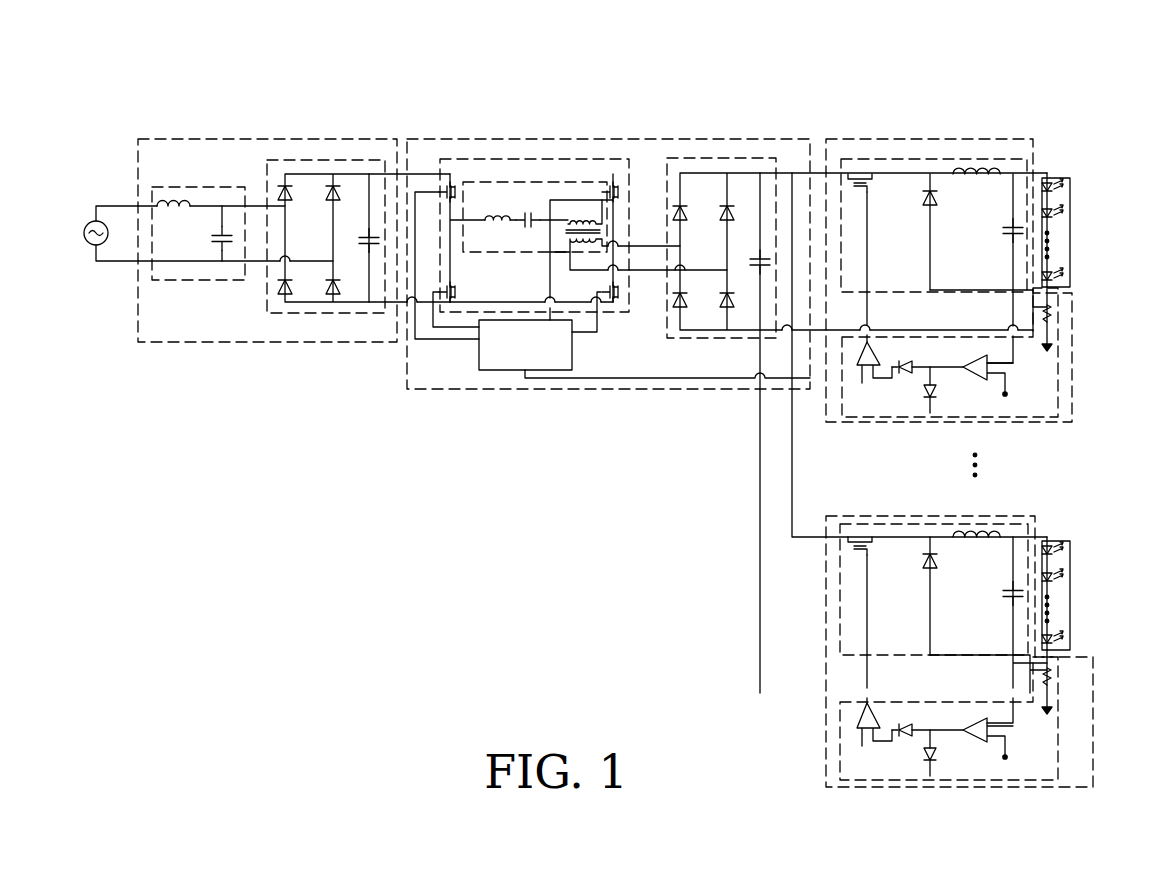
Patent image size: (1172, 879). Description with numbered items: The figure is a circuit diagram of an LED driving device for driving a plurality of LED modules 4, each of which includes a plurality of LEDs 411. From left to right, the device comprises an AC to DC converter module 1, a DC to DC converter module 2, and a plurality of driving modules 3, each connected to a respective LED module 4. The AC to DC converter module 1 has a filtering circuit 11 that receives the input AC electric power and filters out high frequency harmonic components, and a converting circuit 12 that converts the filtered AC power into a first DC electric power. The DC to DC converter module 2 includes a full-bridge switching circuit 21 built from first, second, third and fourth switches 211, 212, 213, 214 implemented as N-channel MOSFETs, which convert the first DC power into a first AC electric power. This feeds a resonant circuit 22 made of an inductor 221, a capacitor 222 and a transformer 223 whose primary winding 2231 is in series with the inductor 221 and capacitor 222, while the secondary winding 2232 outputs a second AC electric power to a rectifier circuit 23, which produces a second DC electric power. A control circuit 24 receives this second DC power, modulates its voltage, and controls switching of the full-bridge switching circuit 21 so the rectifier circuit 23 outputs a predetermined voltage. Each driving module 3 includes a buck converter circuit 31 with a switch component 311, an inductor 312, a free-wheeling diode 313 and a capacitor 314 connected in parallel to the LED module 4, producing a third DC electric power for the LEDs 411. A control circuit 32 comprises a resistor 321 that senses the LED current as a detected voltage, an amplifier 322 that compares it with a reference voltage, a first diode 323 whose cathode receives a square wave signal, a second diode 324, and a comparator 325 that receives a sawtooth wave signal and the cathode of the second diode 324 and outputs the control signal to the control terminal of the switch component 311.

The AC to DC converter module 1 is at (255, 139).
The filtering circuit 11 is at (198, 187).
The converting circuit 12 is at (328, 160).
The DC to DC converter module 2 is at (680, 139).
The full-bridge switching circuit 21 is at (628, 300).
The first switch 211 is at (450, 182).
The second switch 212 is at (612, 182).
The third switch 213 is at (613, 303).
The fourth switch 214 is at (450, 303).
The resonant circuit 22 is at (478, 196).
The inductor 221 is at (500, 213).
The capacitor 222 is at (533, 213).
The transformer 223 is at (630, 255).
The primary winding 2231 is at (580, 221).
The secondary winding 2232 is at (578, 253).
The rectifier circuit 23 is at (720, 158).
The control circuit 24 is at (500, 370).
The driving module 3 is at (887, 139).
The buck converter circuit 31 is at (982, 159).
The switch component 311 is at (856, 179).
The inductor 312 is at (956, 170).
The free-wheeling diode 313 is at (925, 196).
The capacitor 314 is at (1012, 224).
The control circuit 32 is at (1058, 348).
The resistor 321 is at (1053, 317).
The amplifier 322 is at (1005, 370).
The first diode 323 is at (945, 391).
The second diode 324 is at (900, 371).
The comparator 325 is at (855, 353).
The LED module 4 is at (1053, 150).
The LED 411 is at (1052, 190).